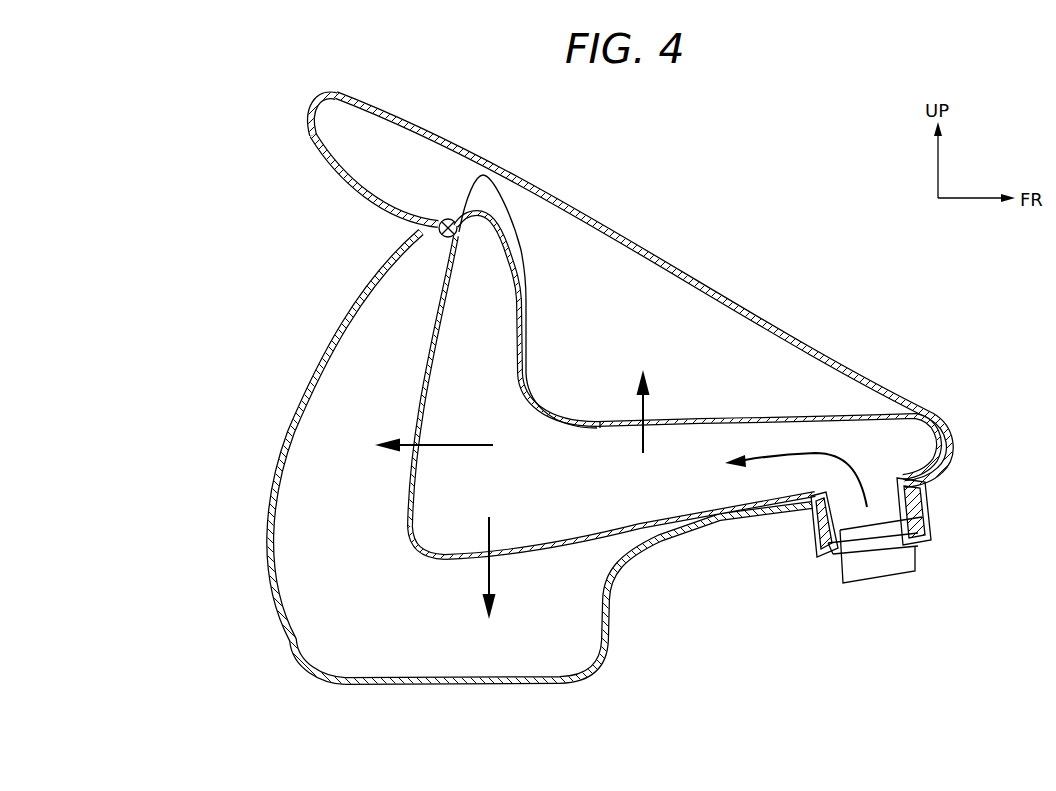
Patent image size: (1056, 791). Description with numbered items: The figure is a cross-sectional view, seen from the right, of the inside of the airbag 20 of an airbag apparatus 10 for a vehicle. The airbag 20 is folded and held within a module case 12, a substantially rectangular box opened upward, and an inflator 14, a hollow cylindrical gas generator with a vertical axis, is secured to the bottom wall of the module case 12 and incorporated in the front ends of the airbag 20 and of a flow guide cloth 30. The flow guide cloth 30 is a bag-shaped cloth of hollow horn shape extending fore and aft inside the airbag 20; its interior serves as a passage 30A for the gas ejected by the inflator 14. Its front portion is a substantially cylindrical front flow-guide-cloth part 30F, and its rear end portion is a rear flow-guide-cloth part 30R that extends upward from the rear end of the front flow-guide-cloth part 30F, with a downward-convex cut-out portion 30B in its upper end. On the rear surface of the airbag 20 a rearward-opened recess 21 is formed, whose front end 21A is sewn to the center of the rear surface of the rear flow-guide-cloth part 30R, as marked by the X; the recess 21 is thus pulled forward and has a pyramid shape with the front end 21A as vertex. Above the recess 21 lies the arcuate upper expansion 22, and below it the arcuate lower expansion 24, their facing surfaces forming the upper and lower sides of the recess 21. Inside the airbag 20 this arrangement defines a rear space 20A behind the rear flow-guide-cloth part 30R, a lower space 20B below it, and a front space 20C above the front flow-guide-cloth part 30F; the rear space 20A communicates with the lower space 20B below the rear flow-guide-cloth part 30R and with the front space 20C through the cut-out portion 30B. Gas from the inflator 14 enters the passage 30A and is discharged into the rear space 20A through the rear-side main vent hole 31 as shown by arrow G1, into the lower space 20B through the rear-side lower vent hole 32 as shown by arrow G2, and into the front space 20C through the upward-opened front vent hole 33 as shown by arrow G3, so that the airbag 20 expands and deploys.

The airbag apparatus 10 is at (746, 188).
The module case 12 is at (932, 515).
The inflator 14 is at (881, 585).
The airbag 20 is at (648, 243).
The rear space 20A is at (405, 338).
The lower space 20B is at (553, 638).
The front space 20C is at (645, 338).
The recess 21 is at (336, 176).
The front end of the recess 21A is at (418, 232).
The upper expansion 22 is at (306, 112).
The lower expansion 24 is at (267, 568).
The flow guide cloth 30 is at (430, 560).
The passage 30A is at (680, 498).
The cut-out portion 30B is at (480, 213).
The front flow-guide-cloth part 30F is at (750, 415).
The rear flow-guide-cloth part 30R is at (527, 293).
The rear-side main vent hole 31 is at (407, 504).
The rear-side lower vent hole 32 is at (456, 561).
The front vent hole 33 is at (603, 429).
The arrow G1 is at (468, 440).
The arrow G2 is at (494, 527).
The arrow G3 is at (647, 447).